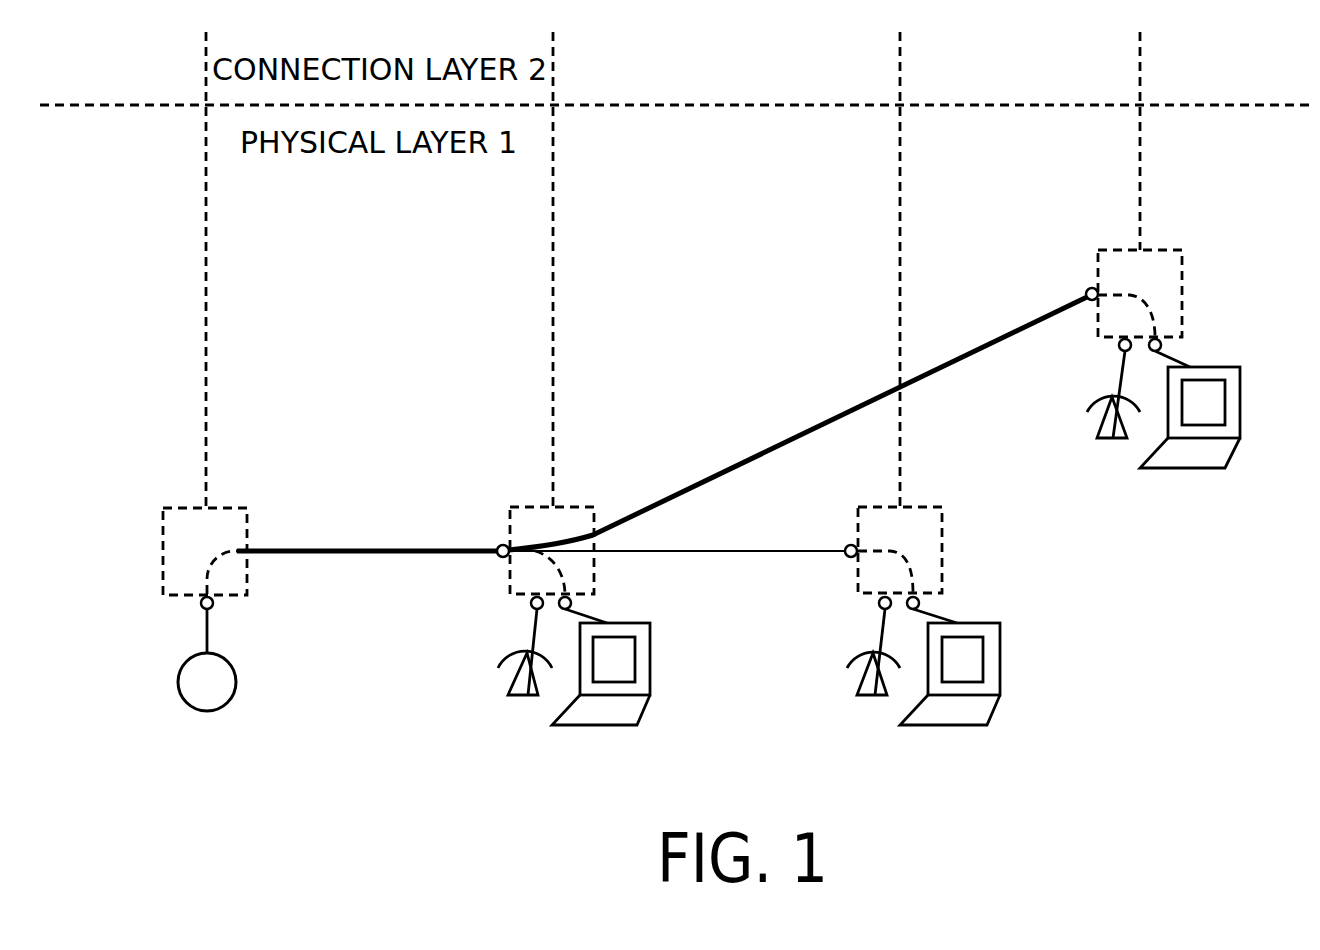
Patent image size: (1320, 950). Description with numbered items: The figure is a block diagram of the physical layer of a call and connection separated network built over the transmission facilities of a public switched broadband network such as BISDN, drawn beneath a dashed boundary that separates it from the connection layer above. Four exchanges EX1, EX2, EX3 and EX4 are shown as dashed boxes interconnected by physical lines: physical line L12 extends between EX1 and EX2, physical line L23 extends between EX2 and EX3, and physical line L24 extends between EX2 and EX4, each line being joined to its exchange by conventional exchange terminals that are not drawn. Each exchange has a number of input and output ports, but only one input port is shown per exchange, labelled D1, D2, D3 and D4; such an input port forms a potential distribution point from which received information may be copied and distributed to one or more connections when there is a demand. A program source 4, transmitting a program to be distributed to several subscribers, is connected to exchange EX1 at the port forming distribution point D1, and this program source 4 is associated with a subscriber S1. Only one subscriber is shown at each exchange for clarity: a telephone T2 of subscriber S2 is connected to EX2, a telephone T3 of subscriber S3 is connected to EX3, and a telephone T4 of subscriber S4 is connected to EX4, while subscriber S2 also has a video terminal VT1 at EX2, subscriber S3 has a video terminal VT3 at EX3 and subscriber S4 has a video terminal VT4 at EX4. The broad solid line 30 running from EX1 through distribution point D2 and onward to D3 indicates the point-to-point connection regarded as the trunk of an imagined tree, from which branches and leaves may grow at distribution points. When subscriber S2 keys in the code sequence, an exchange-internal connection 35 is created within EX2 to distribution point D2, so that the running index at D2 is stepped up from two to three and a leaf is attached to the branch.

The broad solid line 30 is at (662, 460).
The exchange-internal connection 35 is at (560, 570).
The program source 4 is at (187, 688).
The physical line L12 is at (373, 556).
The physical line L23 is at (995, 333).
The physical line L24 is at (807, 556).
The exchange EX1 is at (278, 489).
The exchange EX2 is at (625, 487).
The exchange EX3 is at (1213, 230).
The exchange EX4 is at (972, 487).
The input port D1 is at (212, 608).
The input port D2 is at (498, 543).
The input port D3 is at (1088, 287).
The input port D4 is at (847, 545).
The telephone T2 is at (510, 690).
The telephone T3 is at (1087, 413).
The telephone T4 is at (847, 669).
The video terminal of station S2 VT1 is at (645, 707).
The video terminal VT3 is at (1233, 450).
The video terminal VT4 is at (992, 707).
The subscriber S1 is at (224, 624).
The subscriber S2 is at (573, 624).
The subscriber S3 is at (1164, 366).
The subscriber S4 is at (922, 624).